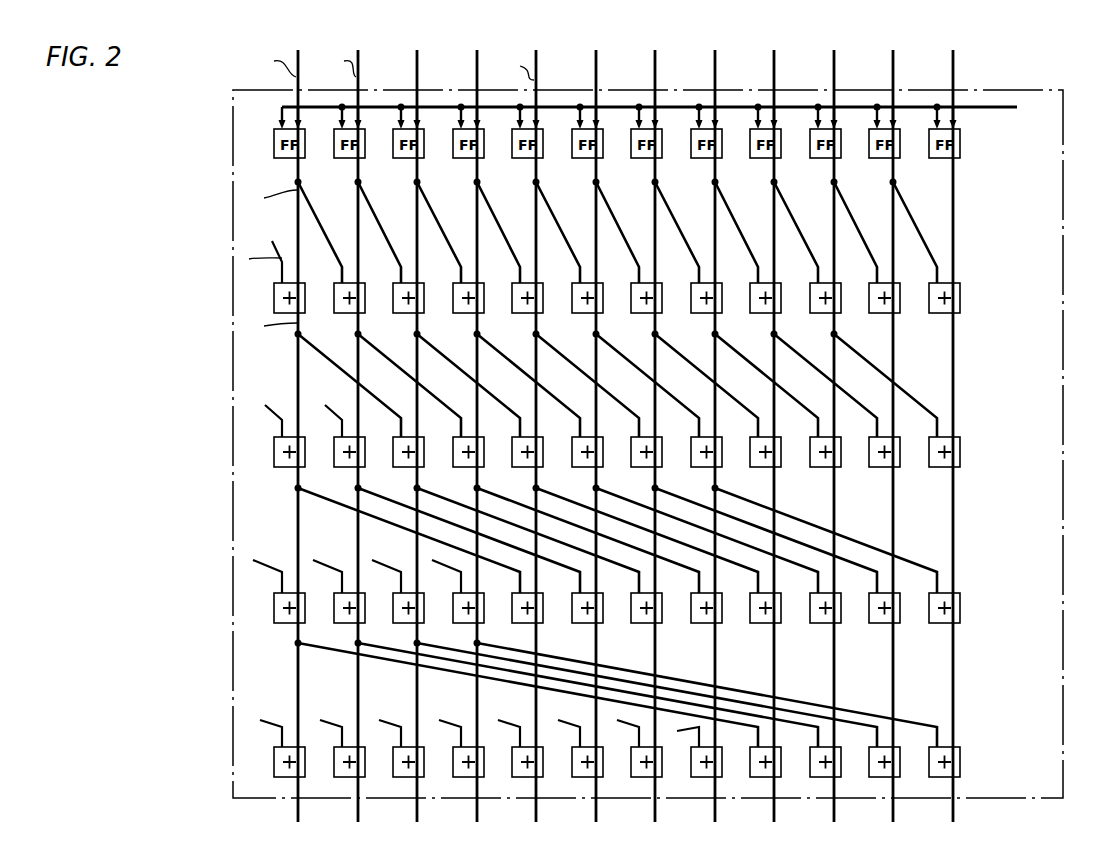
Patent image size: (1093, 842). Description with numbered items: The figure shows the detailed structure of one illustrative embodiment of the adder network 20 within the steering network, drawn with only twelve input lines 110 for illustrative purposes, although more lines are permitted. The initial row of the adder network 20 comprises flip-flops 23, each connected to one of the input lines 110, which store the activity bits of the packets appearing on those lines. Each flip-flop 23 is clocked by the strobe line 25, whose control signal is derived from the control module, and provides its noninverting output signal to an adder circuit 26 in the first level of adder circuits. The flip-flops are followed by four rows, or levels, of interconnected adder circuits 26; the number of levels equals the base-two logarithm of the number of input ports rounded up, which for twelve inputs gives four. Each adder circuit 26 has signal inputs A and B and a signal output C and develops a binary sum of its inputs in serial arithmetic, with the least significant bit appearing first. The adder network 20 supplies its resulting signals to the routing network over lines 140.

The adder network 20 is at (1043, 90).
The flip-flop 23 is at (306, 150).
The strobe line 25 is at (976, 108).
The adder circuit 26 is at (366, 290).
The input line 110 is at (538, 60).
The line 140 is at (597, 816).